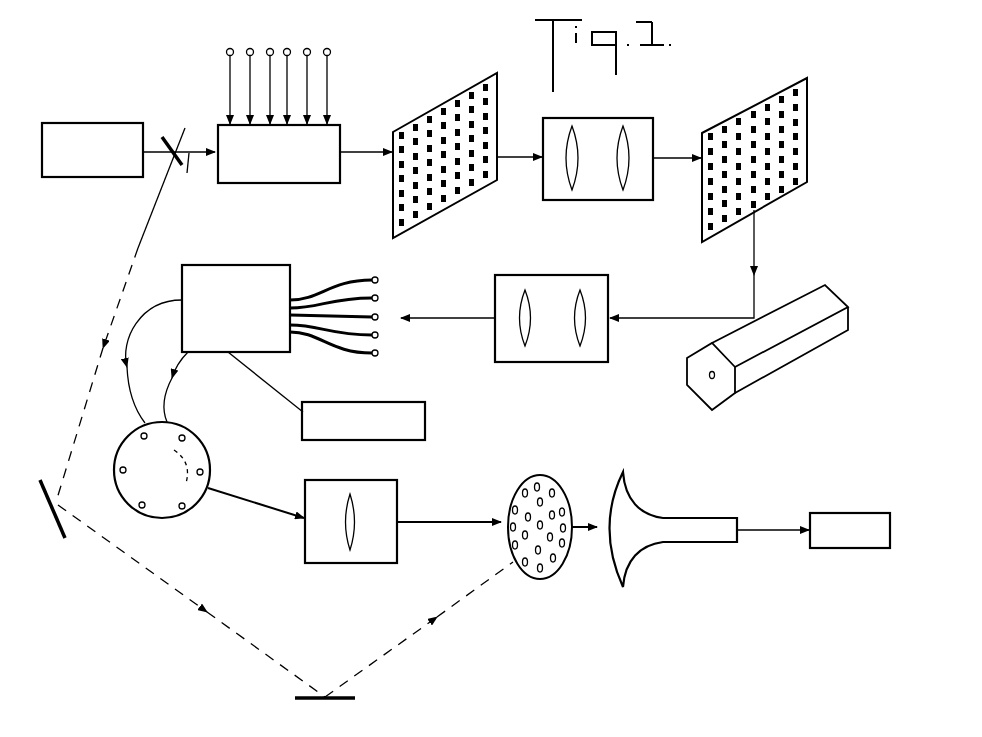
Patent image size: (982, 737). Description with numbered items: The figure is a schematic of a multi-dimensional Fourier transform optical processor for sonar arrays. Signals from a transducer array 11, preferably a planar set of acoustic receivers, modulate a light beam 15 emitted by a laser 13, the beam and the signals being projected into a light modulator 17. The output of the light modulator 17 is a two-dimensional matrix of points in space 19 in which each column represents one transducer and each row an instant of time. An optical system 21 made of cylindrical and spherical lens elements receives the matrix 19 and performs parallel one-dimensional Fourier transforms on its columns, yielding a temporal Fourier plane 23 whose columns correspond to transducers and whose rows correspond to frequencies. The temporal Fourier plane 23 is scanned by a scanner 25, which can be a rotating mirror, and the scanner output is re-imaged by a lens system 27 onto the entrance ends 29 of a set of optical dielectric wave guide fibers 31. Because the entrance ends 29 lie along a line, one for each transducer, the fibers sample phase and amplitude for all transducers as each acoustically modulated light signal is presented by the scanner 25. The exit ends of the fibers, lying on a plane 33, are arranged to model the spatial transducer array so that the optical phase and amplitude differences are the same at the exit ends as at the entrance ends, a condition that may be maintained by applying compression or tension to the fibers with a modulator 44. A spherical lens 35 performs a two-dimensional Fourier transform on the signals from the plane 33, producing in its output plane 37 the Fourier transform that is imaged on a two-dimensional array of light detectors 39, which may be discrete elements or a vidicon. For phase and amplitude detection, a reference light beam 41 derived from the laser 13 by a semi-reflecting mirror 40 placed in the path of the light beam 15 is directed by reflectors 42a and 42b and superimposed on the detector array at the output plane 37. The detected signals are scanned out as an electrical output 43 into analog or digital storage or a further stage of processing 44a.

The transducer array 11 is at (212, 90).
The laser 13 is at (76, 177).
The light beam 15 is at (186, 178).
The light modulator 17 is at (277, 183).
The two-dimensional matrix of points in space 19 is at (432, 214).
The optical system 21 is at (620, 117).
The temporal Fourier plane 23 is at (803, 93).
The scanner 25 is at (772, 372).
The lens system 27 is at (550, 362).
The entrance ends 29 is at (376, 277).
The optical dielectric wave guide fibers 31 is at (225, 263).
The plane 33 is at (207, 453).
The spherical lens 35 is at (340, 563).
The output plane 37 is at (543, 477).
The two-dimensional array of light detectors 39 is at (690, 518).
The semi-reflecting mirror 40 is at (170, 178).
The reference light beam 41 is at (407, 644).
The reflector 42a is at (63, 540).
The reflector 42b is at (355, 698).
The electrical output 43 is at (772, 535).
The modulator 44 is at (337, 442).
The further stage of processing 44a is at (830, 548).